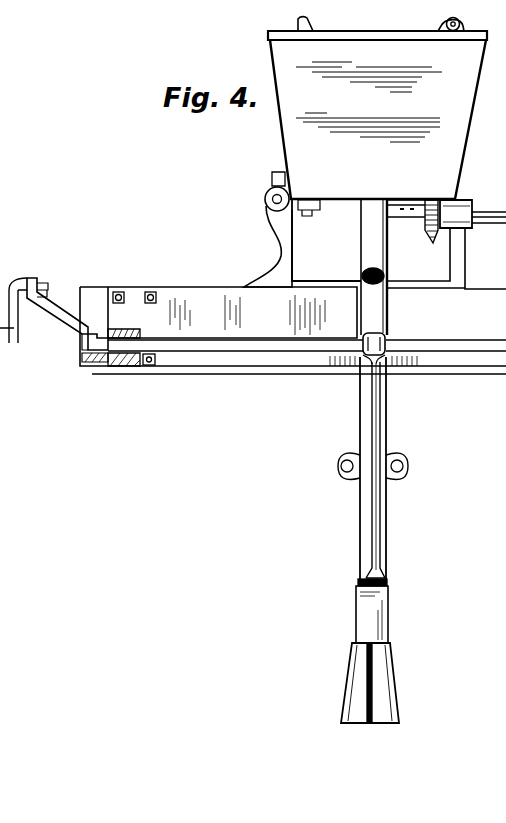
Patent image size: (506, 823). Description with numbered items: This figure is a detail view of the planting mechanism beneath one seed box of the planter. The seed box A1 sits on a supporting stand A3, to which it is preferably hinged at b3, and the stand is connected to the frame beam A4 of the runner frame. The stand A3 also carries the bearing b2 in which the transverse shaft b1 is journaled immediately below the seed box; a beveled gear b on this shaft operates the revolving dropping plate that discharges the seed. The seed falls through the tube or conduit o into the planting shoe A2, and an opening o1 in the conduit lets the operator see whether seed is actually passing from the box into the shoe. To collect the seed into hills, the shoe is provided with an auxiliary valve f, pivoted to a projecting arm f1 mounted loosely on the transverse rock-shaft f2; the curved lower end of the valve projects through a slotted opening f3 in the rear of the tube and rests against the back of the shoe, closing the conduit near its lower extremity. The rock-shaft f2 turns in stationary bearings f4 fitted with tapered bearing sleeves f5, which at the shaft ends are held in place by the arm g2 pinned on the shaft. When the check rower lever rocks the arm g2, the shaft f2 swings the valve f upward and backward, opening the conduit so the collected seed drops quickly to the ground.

The seed box A1 is at (377, 108).
The planting shoe A2 is at (352, 660).
The supporting stand A3 is at (276, 216).
The frame beam A4 is at (298, 289).
The beveled gear b is at (422, 244).
The transverse shaft b1 is at (496, 224).
The bearing b2 is at (470, 206).
The hinge b3 is at (265, 199).
The tube or conduit o is at (374, 267).
The opening o1 is at (432, 271).
The auxiliary valve f is at (373, 413).
The projecting arm f1 is at (392, 358).
The transverse shaft (rock-shaft) f2 is at (300, 353).
The slotted opening f3 is at (390, 584).
The stationary bearing f4 is at (122, 368).
The bearing sleeve f5 is at (144, 367).
The arm g2 is at (67, 325).